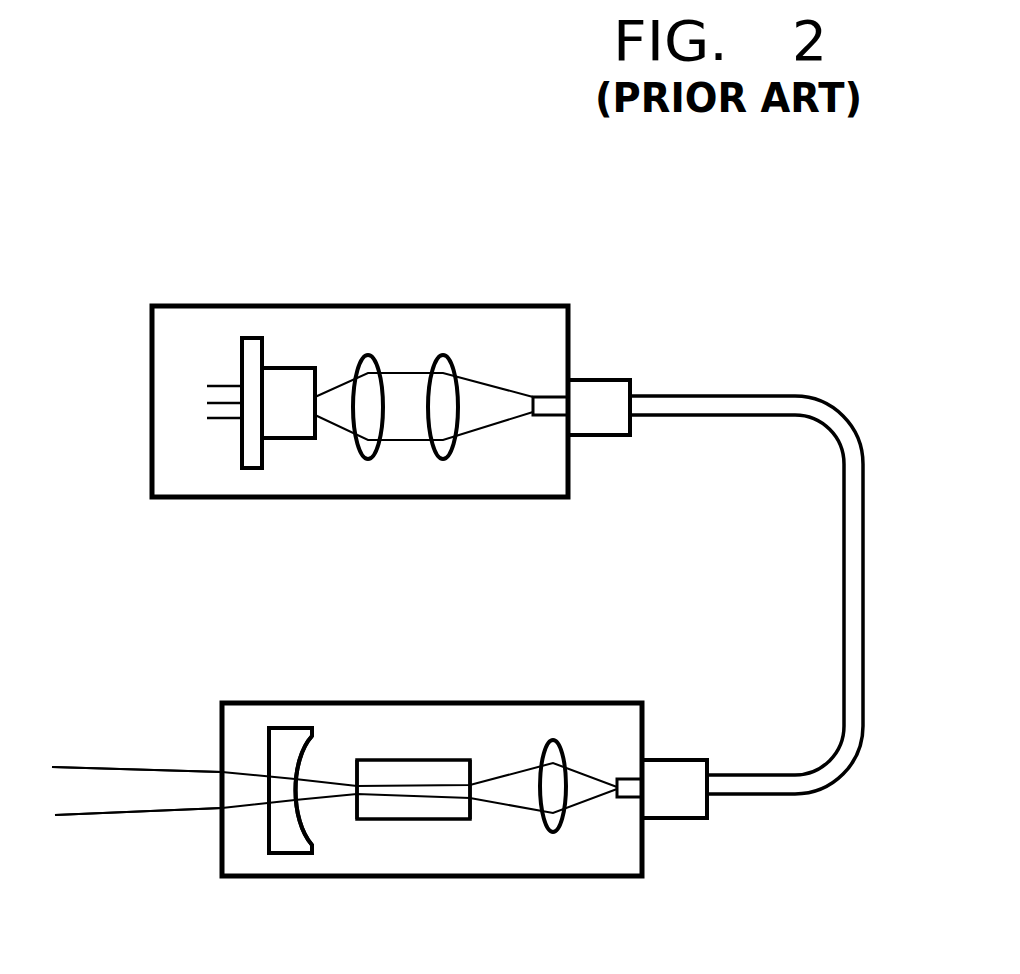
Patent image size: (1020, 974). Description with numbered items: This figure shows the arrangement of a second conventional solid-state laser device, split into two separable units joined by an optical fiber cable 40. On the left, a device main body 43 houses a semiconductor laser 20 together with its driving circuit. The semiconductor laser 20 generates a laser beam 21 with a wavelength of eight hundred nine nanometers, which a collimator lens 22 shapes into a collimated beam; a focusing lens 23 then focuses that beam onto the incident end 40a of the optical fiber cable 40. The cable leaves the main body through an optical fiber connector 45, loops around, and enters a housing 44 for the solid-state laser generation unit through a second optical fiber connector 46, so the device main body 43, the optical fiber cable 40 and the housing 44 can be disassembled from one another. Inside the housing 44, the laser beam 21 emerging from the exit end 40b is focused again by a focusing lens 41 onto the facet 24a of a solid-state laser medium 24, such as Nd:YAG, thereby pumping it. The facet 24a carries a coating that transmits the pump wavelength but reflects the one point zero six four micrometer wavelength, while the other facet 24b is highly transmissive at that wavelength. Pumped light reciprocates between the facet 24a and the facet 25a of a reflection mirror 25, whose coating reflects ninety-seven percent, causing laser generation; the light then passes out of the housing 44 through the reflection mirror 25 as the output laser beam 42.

The semiconductor laser 20 is at (253, 338).
The laser beam 21 is at (343, 400).
The collimator lens 22 is at (367, 458).
The focusing lens 23 is at (443, 460).
The solid-state laser medium 24 is at (425, 770).
The facet 24a is at (470, 807).
The other facet 24b is at (355, 775).
The reflection mirror 25 is at (283, 855).
The facet 25a is at (300, 800).
The optical fiber cable 40 is at (843, 565).
The incident end 40a is at (533, 397).
The exit end 40b is at (617, 778).
The focusing lens 41 is at (553, 827).
The output laser beam 42 is at (130, 798).
The device main body 43 is at (152, 385).
The housing 44 is at (222, 723).
The optical fiber connector 45 is at (597, 380).
The optical fiber connector 46 is at (670, 760).